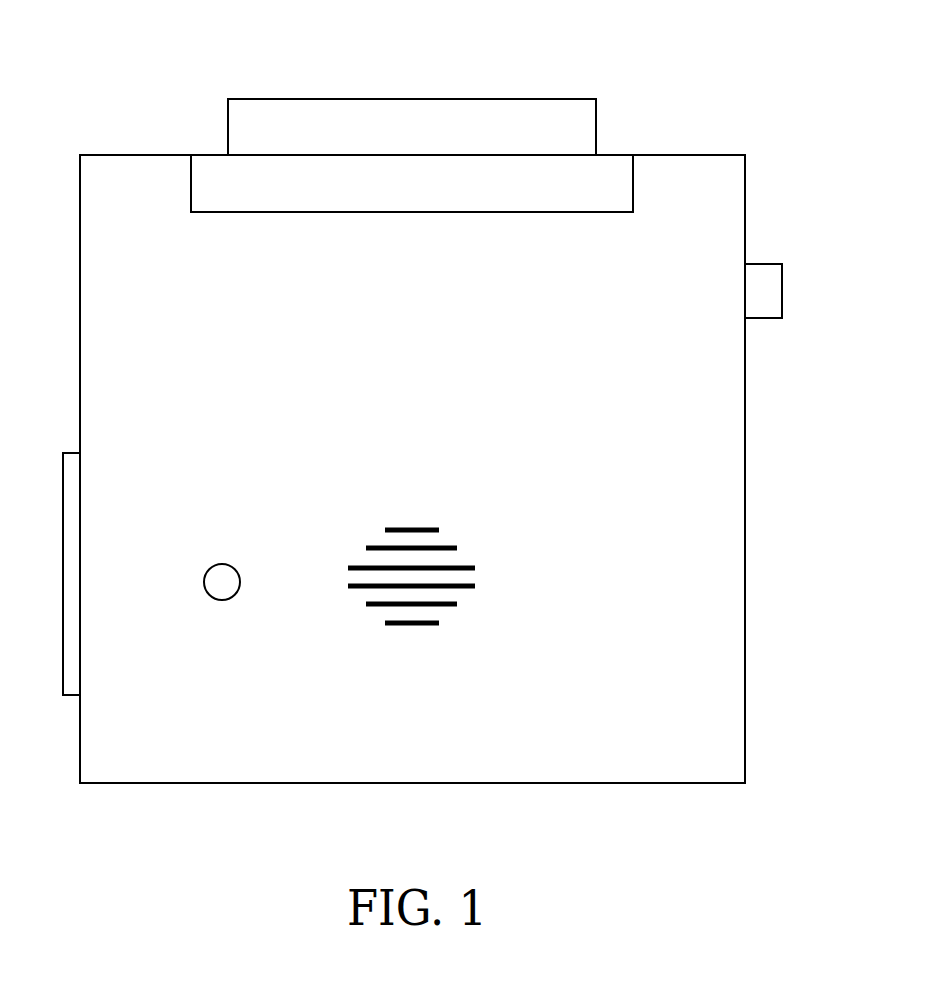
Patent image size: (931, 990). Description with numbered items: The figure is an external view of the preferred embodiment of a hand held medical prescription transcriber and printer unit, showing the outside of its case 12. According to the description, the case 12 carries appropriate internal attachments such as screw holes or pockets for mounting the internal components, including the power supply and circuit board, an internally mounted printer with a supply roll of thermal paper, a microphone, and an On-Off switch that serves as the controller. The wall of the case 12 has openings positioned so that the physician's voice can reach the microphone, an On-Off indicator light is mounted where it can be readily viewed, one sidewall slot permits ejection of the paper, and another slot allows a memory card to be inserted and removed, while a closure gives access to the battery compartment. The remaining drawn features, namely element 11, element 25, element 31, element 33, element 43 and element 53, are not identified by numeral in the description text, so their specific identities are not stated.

The speaker grille 11 is at (464, 560).
The case 12 is at (212, 597).
The top plate 25 is at (205, 153).
The side tab 31 is at (782, 273).
The housing body 33 is at (747, 675).
The side panel 43 is at (62, 496).
The top block 53 is at (512, 98).